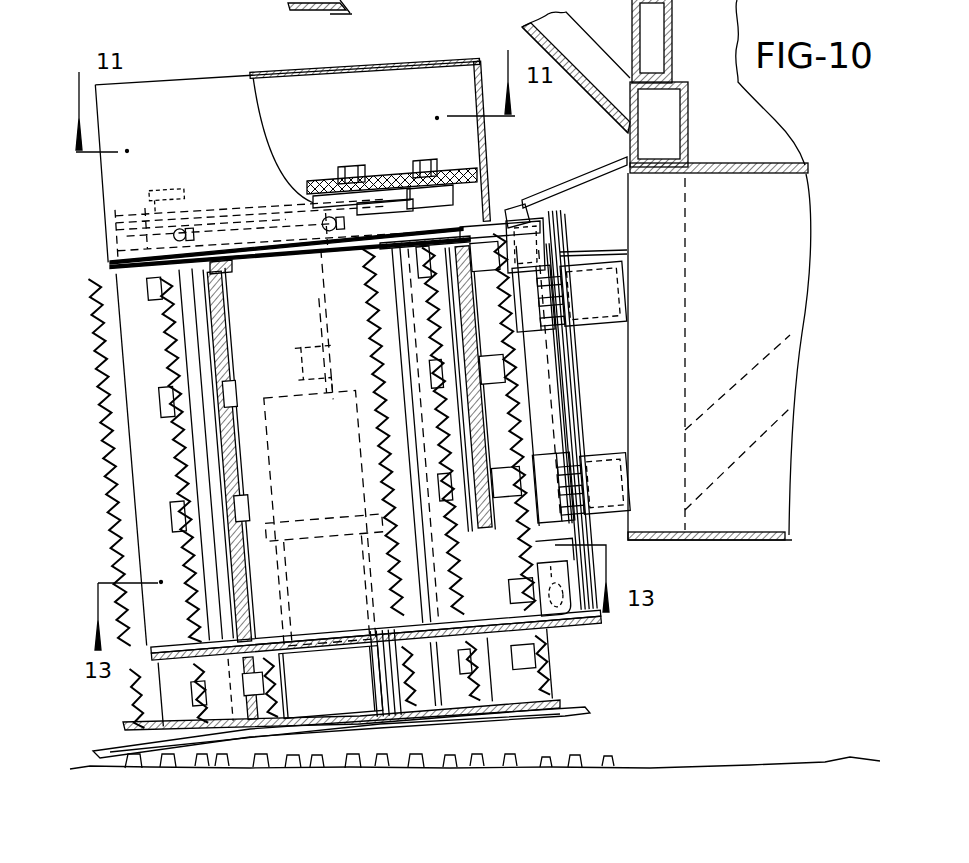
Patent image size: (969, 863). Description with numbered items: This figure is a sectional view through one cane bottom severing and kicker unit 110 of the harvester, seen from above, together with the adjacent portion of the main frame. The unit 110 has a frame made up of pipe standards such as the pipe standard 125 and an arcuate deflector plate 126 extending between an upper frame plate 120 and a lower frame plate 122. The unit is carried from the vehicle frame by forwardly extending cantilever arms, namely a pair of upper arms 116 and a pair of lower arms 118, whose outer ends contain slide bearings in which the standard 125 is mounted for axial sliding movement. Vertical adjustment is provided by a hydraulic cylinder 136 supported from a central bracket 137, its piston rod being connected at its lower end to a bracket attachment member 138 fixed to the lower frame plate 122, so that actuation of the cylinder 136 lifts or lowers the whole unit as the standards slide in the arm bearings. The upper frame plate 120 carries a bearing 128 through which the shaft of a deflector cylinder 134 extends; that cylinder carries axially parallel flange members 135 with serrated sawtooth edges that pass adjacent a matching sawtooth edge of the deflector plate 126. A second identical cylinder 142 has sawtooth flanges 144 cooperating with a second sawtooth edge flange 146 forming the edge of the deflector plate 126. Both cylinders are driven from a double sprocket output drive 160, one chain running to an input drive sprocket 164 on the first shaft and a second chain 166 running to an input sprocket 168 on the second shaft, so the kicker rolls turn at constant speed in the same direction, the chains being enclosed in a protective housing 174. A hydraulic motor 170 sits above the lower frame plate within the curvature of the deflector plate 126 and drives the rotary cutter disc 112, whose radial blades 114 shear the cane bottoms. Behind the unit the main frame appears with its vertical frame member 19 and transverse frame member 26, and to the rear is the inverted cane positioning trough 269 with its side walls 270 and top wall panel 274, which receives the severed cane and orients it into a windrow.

The vertical frame member 19 is at (684, 225).
The transverse frame member 26 is at (668, 127).
The cane bottom severing and kicker unit 110 is at (168, 340).
The cutter disc 112 is at (520, 705).
The radial blades 114 is at (572, 712).
The upper arms 116 is at (606, 300).
The lower arms 118 is at (607, 474).
The upper frame plate 120 is at (492, 222).
The lower frame plate 122 is at (312, 650).
The pipe standard 125 is at (570, 398).
The arcuate deflector plate 126 is at (338, 581).
The bearing 128 is at (583, 627).
The deflector cylinder 134 is at (203, 342).
The flange members 135 is at (100, 322).
The hydraulic cylinder 136 is at (553, 372).
The central bracket 137 is at (582, 197).
The bracket attachment member 138 is at (542, 633).
The cylinder 142 is at (372, 290).
The sawtooth flanges 144 is at (380, 468).
The second sawtooth edge flange 146 is at (299, 349).
The double sprocket output drive 160 is at (300, 210).
The input drive sprocket 164 is at (183, 200).
The second chain 166 is at (398, 174).
The input sprocket 168 is at (452, 170).
The hydraulic motor 170 is at (298, 390).
The protective housing 174 is at (232, 72).
The inverted cane positioning trough 269 is at (777, 327).
The side walls 270 is at (730, 522).
The top wall panel 274 is at (762, 178).